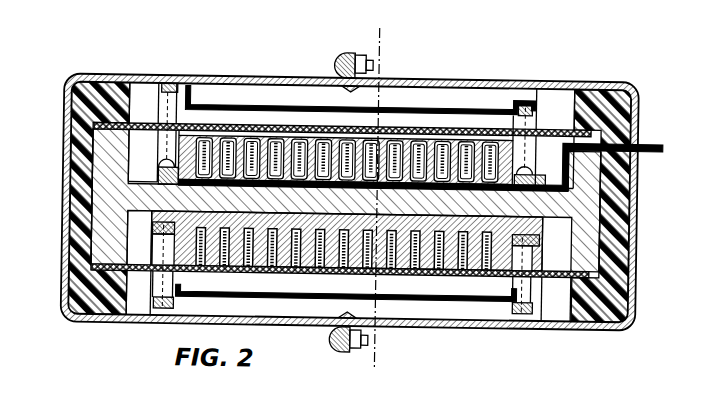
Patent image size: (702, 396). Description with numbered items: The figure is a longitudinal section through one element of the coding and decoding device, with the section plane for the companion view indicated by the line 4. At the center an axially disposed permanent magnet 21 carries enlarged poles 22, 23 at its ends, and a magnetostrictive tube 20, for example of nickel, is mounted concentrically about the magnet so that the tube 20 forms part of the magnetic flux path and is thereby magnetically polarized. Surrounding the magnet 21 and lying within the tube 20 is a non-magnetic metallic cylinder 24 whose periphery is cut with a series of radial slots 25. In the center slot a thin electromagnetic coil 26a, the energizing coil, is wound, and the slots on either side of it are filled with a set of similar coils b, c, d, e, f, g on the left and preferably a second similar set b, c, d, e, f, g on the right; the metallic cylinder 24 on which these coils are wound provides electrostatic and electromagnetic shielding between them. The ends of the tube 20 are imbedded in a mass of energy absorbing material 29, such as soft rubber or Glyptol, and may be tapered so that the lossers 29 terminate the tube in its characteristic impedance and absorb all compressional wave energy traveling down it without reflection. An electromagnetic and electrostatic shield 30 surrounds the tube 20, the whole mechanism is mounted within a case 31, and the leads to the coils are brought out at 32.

The magnetostrictive tube 20 is at (137, 128).
The permanent magnet 21 is at (560, 207).
The enlarged pole 22 is at (635, 216).
The enlarged pole 23 is at (68, 177).
The non-magnetic metallic cylinder 24 is at (193, 250).
The radial slots 25 is at (246, 275).
The energizing coil 26a is at (346, 139).
The coil b is at (323, 139).
The coil c is at (299, 139).
The coil d is at (275, 139).
The coil e is at (251, 139).
The coil f is at (227, 139).
The coil g is at (204, 139).
The energy absorbing material 29 is at (90, 81).
The electromagnetic and electrostatic shield 30 is at (211, 106).
The case 31 is at (549, 80).
The coil leads 32 is at (649, 139).
The section line 4- 4 is at (377, 28).